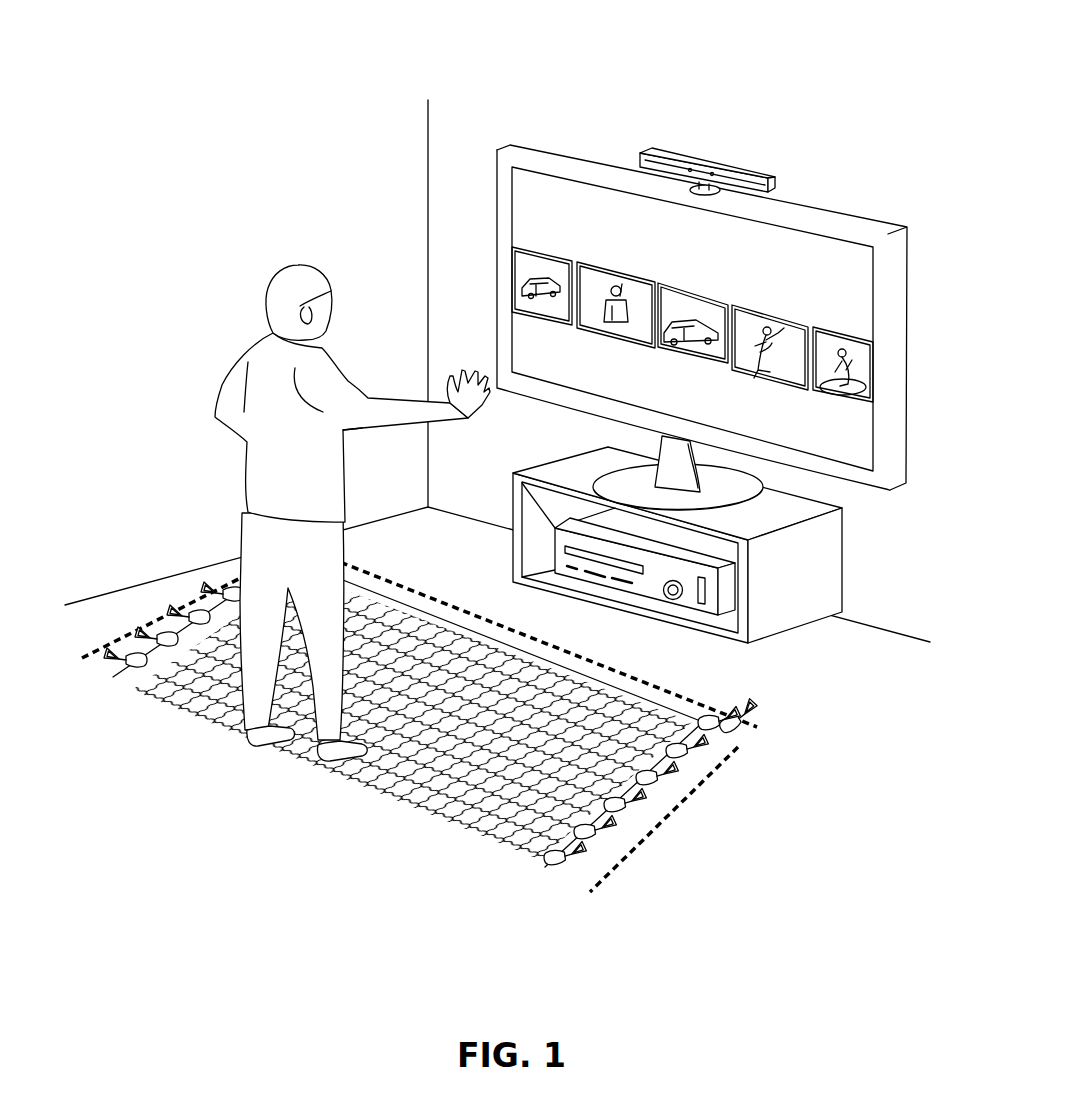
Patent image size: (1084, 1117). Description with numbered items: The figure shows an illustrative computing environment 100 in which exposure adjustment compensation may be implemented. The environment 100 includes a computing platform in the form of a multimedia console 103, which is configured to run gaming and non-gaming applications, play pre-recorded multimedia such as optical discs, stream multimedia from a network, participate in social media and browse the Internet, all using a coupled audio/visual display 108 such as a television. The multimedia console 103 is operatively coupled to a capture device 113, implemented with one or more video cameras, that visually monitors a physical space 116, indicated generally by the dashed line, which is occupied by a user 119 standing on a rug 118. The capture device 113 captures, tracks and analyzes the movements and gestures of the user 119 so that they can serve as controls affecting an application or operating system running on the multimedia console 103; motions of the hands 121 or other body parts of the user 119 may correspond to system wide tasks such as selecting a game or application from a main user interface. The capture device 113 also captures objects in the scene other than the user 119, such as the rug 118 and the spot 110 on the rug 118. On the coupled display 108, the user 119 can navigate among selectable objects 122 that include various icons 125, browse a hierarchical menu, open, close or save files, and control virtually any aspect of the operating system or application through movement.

The computing environment 100 is at (498, 34).
The multimedia console 103 is at (647, 583).
The audio/visual display 108 is at (497, 207).
The spot 110 is at (460, 657).
The capture device 113 is at (712, 157).
The physical space 116 is at (678, 803).
The rug 118 is at (701, 739).
The user 119 is at (349, 539).
The hands 121 is at (473, 372).
The selectable objects 122 is at (692, 349).
The icons 125 is at (692, 350).